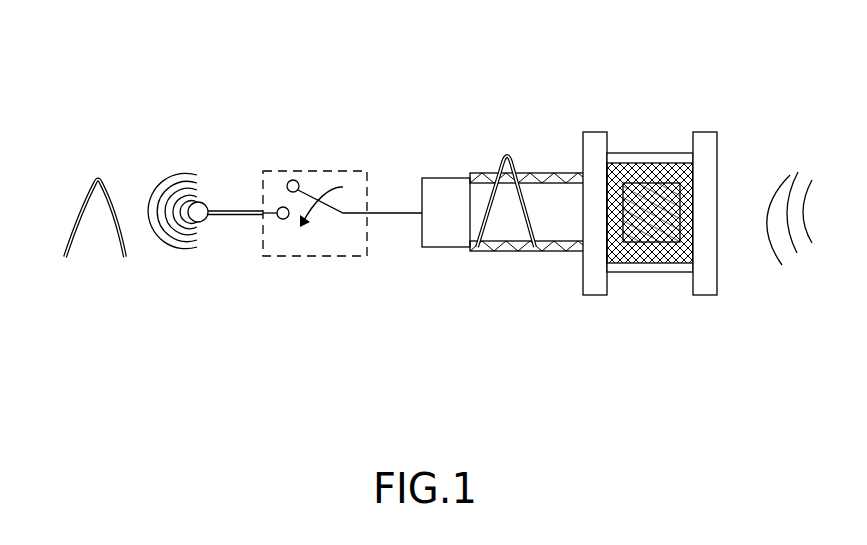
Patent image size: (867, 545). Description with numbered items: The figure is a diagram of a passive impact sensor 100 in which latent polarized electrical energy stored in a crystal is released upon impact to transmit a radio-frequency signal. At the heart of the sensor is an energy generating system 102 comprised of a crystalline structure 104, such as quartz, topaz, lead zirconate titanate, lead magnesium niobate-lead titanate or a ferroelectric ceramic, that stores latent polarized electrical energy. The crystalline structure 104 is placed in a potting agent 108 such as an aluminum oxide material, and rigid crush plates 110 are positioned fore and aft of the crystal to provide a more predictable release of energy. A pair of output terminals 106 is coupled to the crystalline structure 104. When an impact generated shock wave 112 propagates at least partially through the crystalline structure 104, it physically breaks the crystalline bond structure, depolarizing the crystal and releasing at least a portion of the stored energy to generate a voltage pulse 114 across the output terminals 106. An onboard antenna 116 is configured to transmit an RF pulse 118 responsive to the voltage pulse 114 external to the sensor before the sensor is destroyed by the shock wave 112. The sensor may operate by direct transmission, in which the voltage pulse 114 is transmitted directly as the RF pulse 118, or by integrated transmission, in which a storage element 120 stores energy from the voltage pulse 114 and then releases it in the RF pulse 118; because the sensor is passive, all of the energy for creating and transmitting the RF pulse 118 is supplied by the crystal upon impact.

The passive impact sensor 100 is at (198, 72).
The energy generating system 102 is at (628, 292).
The crystalline structure 104 is at (662, 232).
The output terminals 106 is at (510, 252).
The potting agent 108 is at (662, 168).
The crush plates 110 is at (705, 132).
The shock wave 112 is at (773, 170).
The voltage pulse 114 is at (507, 152).
The antenna 116 is at (173, 250).
The RF pulse 118 is at (80, 198).
The storage element 120 is at (338, 172).